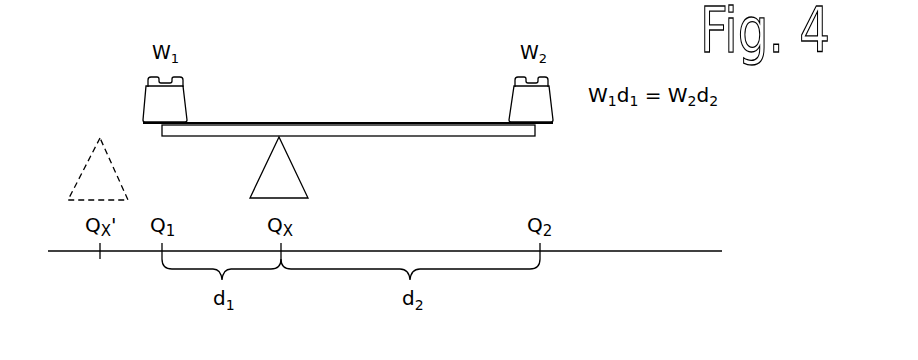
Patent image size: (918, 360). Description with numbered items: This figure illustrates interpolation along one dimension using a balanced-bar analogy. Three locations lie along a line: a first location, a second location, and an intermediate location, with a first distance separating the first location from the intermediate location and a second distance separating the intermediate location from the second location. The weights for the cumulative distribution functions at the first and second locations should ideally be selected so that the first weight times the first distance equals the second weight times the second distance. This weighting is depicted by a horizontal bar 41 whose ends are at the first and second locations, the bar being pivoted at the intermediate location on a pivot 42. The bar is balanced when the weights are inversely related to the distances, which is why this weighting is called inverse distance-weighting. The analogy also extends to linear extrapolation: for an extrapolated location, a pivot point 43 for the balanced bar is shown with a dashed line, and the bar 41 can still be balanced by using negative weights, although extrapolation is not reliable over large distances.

The horizontal bar 41 is at (397, 137).
The pivot 42 is at (279, 136).
The pivot point 43 is at (100, 124).